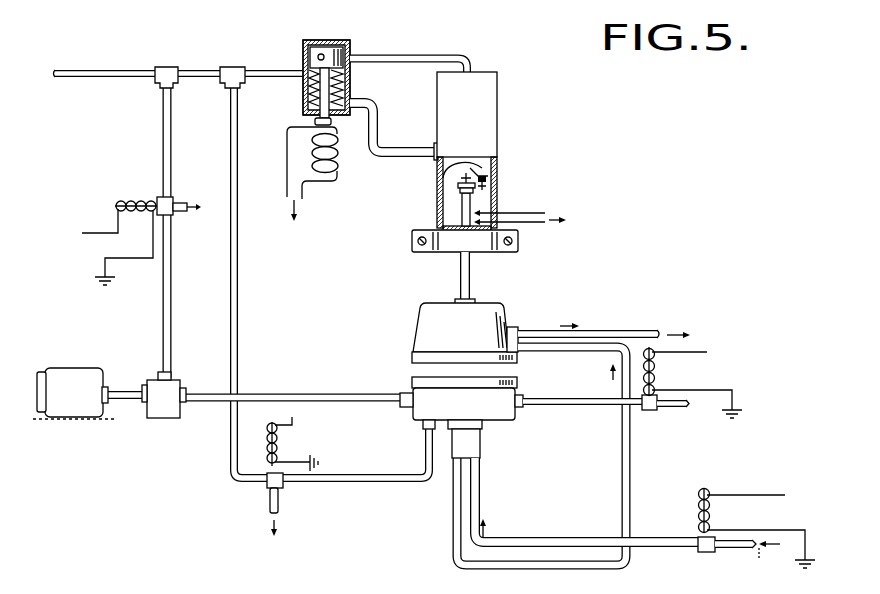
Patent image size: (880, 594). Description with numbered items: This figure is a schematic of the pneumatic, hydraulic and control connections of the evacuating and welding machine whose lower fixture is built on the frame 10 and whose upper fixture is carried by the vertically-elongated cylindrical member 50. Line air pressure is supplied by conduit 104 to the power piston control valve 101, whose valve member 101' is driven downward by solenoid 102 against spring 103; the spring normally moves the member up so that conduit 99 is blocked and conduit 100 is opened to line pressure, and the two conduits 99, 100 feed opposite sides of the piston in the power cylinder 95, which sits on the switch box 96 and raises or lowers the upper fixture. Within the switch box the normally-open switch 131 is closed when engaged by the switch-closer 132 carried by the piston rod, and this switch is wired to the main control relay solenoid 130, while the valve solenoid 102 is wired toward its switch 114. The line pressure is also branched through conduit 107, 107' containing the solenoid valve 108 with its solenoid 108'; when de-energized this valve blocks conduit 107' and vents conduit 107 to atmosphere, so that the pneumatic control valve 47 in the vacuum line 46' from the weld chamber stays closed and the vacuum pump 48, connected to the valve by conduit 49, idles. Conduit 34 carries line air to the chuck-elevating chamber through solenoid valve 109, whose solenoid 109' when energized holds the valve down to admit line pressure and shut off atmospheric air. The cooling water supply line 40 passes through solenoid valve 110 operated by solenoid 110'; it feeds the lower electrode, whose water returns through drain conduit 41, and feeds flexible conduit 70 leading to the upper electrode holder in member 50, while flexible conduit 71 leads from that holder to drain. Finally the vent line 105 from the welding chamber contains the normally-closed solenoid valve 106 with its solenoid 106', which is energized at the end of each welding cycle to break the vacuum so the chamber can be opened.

The frame 10 is at (473, 411).
The conduit 34 is at (232, 482).
The supply conduit 40 is at (658, 540).
The drain conduit 41 is at (445, 556).
The vacuum line 46' is at (294, 365).
The pneumatic control valve 47 is at (147, 386).
The vacuum pump 48 is at (65, 383).
The conduit 49 is at (115, 391).
The cylindrical member 50 is at (490, 317).
The flexible conduit 70 is at (534, 344).
The flexible conduit 71 is at (633, 333).
The power cylinder 95 is at (494, 118).
The switch box 96 is at (437, 195).
The conduit 99 is at (466, 56).
The conduit 100 is at (398, 150).
The power piston control valve 101 is at (326, 62).
The valve member 101' is at (354, 68).
The solenoid 102 is at (309, 181).
The spring 103 is at (345, 78).
The conduit 104 is at (268, 70).
The vent line 105 is at (603, 407).
The solenoid valve 106 is at (665, 422).
The solenoid 106' is at (724, 382).
The conduit 107 is at (193, 229).
The conduit 107' is at (142, 112).
The solenoid valve 108 is at (179, 188).
The solenoid 108' is at (97, 227).
The solenoid valve 109 is at (273, 513).
The solenoid 109' is at (311, 441).
The solenoid valve 110 is at (723, 565).
The solenoid 110' is at (757, 507).
The switch 114 is at (309, 218).
The main control relay solenoid 130 is at (617, 219).
The switch 131 is at (478, 213).
The switch-closer 132 is at (486, 180).